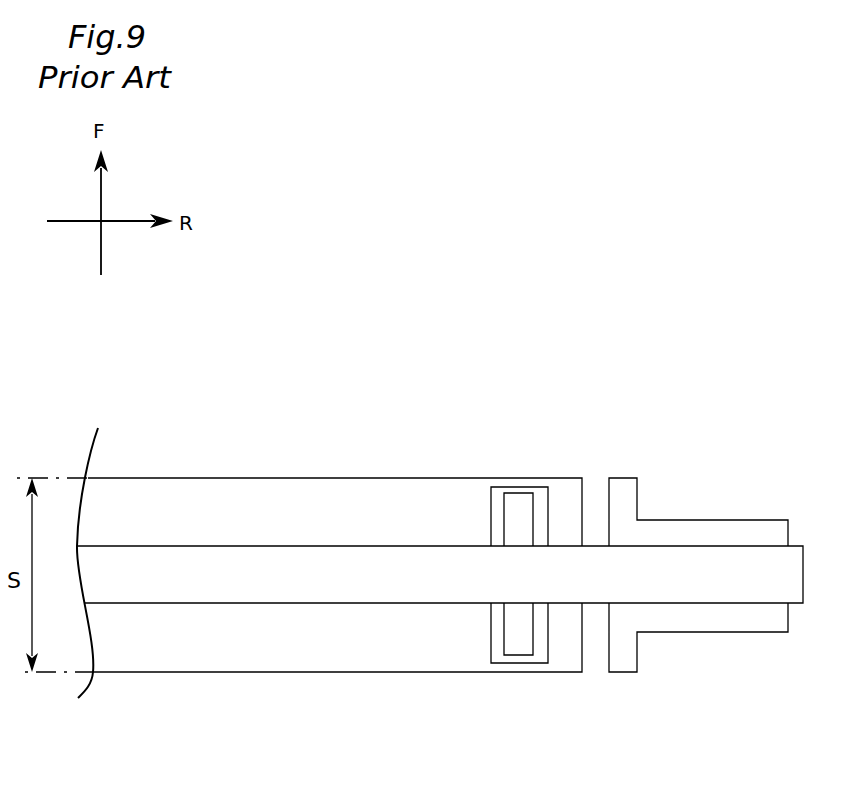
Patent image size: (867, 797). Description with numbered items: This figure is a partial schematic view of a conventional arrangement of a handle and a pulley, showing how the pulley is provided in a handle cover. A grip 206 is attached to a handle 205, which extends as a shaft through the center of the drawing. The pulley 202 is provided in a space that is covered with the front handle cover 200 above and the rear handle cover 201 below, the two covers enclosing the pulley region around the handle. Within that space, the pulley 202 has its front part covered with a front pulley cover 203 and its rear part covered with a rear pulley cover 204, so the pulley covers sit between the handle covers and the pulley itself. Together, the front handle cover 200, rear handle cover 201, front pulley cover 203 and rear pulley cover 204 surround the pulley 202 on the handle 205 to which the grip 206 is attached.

The front handle cover 200 is at (265, 478).
The rear handle cover 201 is at (217, 672).
The pulley 202 is at (515, 638).
The front pulley cover 203 is at (489, 523).
The rear pulley cover 204 is at (490, 647).
The handle 205 is at (687, 585).
The grip 206 is at (683, 528).